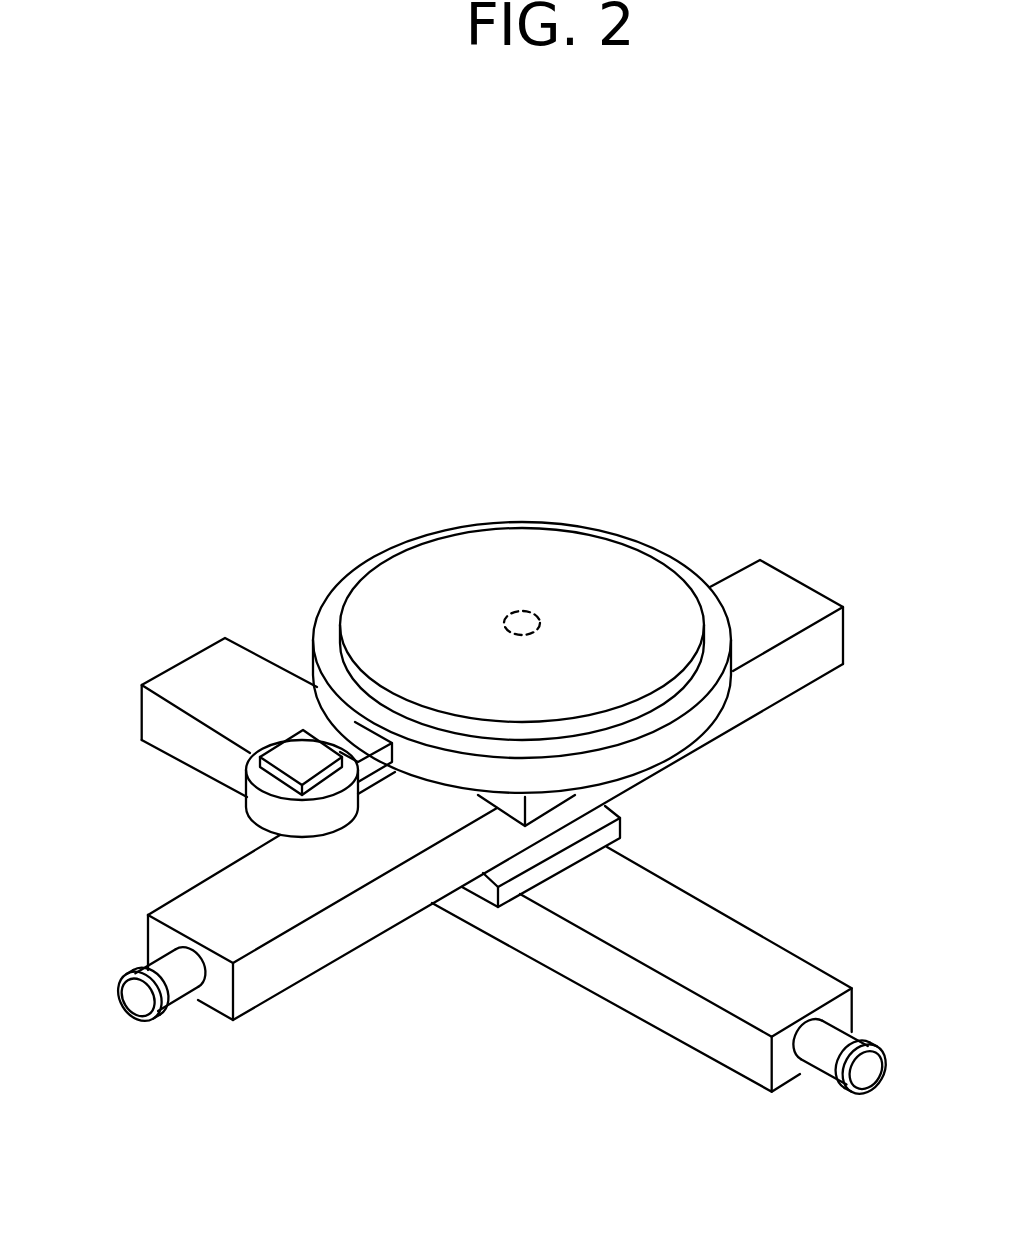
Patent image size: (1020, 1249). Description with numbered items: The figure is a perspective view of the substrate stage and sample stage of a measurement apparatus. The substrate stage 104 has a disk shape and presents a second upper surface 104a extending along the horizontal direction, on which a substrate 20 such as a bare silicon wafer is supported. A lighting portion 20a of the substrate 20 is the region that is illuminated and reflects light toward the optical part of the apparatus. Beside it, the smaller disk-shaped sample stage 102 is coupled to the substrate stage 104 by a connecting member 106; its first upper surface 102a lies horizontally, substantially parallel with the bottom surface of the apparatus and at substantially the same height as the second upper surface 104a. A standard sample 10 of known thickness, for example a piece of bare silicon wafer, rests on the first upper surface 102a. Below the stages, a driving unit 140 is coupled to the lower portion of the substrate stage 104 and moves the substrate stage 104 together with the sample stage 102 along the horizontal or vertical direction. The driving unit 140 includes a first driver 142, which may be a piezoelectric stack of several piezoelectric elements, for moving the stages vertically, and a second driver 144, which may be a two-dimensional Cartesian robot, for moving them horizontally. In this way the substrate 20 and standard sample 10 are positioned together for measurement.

The standard sample 10 is at (218, 683).
The substrate 20 is at (593, 553).
The lighting portion 20a is at (518, 610).
The sample stage 102 is at (260, 808).
The first upper surface 102a is at (260, 777).
The substrate stage 104 is at (702, 723).
The second upper surface 104a is at (718, 647).
The connecting member 106 is at (298, 748).
The driving unit 140 is at (517, 1035).
The first driver 142 is at (533, 807).
The second driver 144 is at (720, 922).